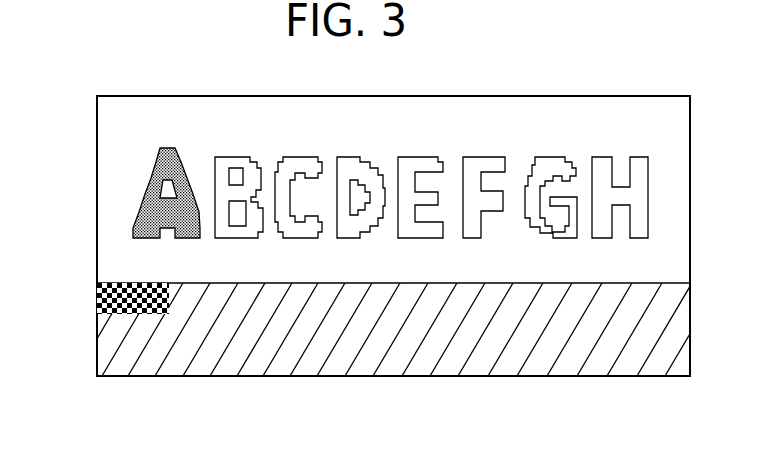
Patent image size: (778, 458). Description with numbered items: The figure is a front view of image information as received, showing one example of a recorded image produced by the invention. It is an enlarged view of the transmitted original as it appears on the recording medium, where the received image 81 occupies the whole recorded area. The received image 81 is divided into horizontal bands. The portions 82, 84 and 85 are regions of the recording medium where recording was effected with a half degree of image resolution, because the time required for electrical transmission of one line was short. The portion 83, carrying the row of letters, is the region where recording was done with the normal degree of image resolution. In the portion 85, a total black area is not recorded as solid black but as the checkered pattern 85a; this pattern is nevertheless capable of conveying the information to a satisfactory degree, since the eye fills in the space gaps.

The received image 81 is at (168, 96).
The half-resolution recorded portion 82 is at (89, 95).
The normal-resolution recorded portion 83 is at (89, 158).
The half-resolution recorded portion 84 is at (89, 238).
The half-resolution recorded portion 85 is at (89, 283).
The checkered pattern 85a is at (141, 314).